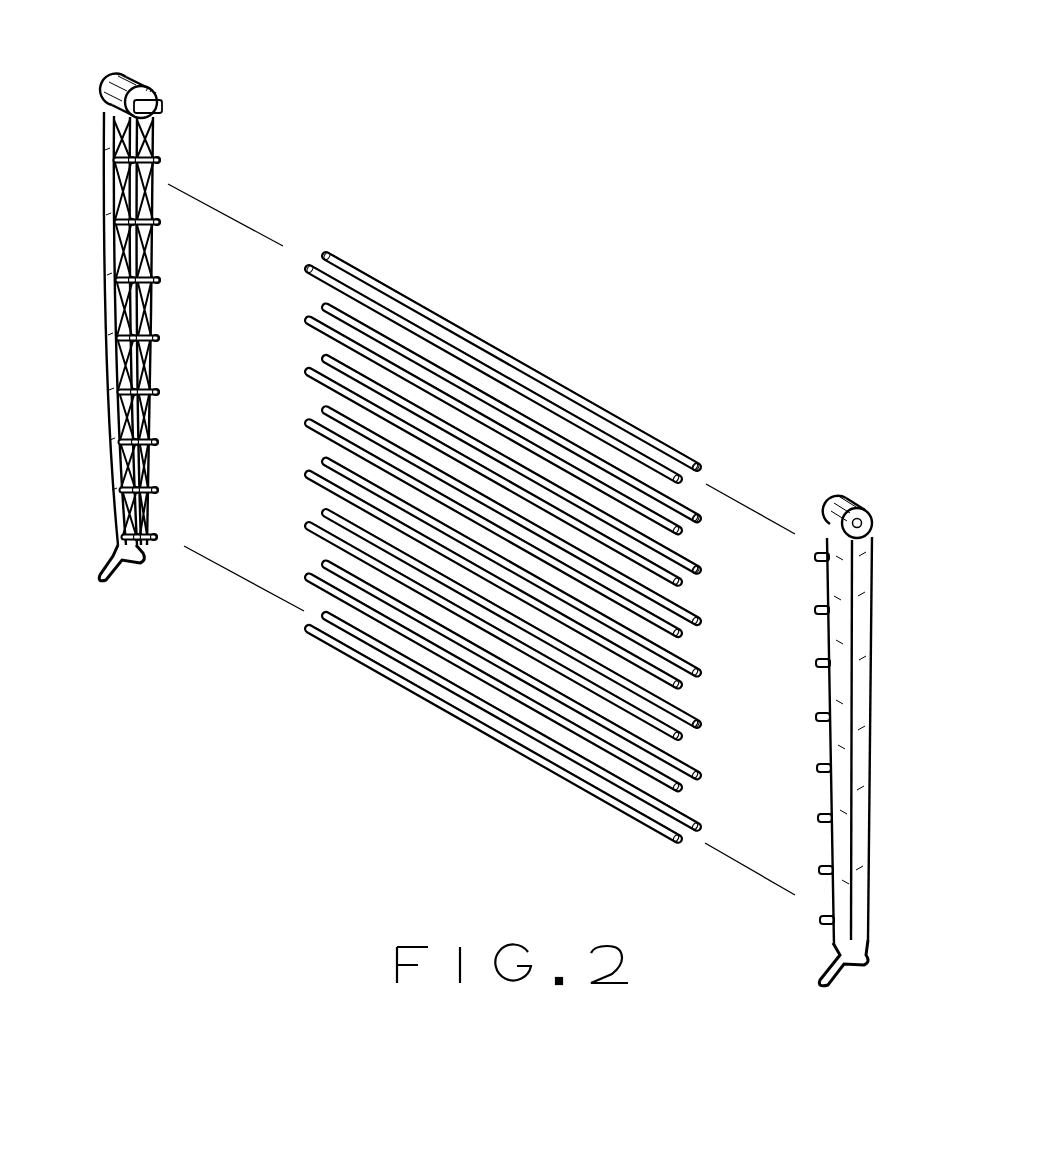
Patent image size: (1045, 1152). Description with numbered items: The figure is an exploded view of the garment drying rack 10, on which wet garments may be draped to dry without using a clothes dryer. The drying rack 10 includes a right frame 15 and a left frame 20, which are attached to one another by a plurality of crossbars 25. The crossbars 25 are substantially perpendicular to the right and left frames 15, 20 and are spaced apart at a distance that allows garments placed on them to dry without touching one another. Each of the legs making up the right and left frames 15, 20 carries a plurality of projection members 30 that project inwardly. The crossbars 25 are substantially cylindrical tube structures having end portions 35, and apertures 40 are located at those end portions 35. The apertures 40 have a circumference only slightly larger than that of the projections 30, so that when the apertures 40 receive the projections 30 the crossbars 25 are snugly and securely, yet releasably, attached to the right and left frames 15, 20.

The garment drying rack 10 is at (510, 188).
The right frame 15 is at (900, 658).
The left frame 20 is at (76, 126).
The crossbar 25 is at (501, 353).
The projection member 30 is at (160, 160).
The end portion 35 is at (333, 238).
The aperture 40 is at (703, 468).